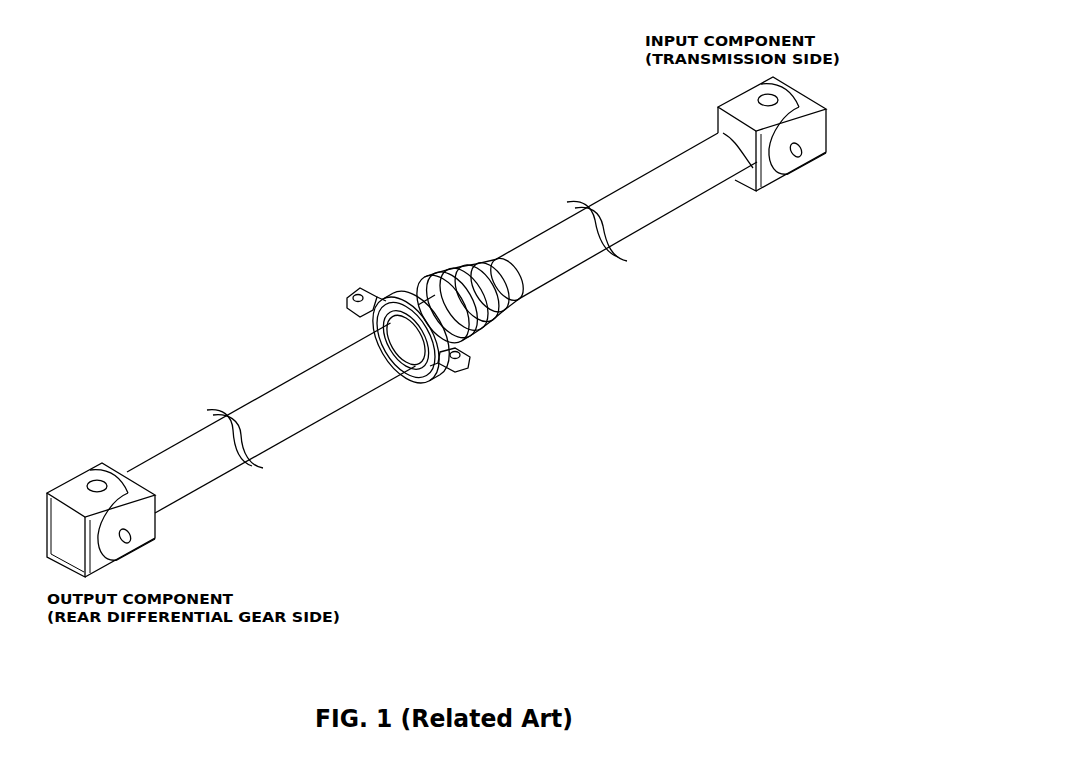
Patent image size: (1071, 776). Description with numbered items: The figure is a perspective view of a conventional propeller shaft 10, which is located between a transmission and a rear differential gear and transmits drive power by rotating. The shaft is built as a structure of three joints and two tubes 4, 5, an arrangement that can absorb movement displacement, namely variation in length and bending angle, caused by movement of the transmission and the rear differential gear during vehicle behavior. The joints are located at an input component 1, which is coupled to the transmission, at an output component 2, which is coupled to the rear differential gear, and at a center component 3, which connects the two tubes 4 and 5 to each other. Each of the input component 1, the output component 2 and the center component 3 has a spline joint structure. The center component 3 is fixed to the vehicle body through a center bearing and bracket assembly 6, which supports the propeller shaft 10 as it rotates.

The input component 1 is at (705, 121).
The output component 2 is at (70, 466).
The center component 3 is at (441, 267).
The tube 4 is at (553, 283).
The tube 5 is at (288, 437).
The center bearing and bracket assembly 6 is at (446, 390).
The propeller shaft 10 is at (442, 323).